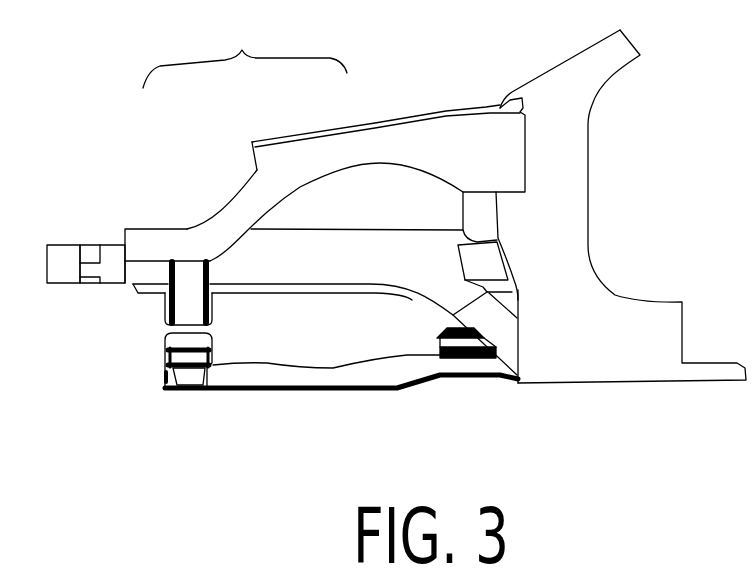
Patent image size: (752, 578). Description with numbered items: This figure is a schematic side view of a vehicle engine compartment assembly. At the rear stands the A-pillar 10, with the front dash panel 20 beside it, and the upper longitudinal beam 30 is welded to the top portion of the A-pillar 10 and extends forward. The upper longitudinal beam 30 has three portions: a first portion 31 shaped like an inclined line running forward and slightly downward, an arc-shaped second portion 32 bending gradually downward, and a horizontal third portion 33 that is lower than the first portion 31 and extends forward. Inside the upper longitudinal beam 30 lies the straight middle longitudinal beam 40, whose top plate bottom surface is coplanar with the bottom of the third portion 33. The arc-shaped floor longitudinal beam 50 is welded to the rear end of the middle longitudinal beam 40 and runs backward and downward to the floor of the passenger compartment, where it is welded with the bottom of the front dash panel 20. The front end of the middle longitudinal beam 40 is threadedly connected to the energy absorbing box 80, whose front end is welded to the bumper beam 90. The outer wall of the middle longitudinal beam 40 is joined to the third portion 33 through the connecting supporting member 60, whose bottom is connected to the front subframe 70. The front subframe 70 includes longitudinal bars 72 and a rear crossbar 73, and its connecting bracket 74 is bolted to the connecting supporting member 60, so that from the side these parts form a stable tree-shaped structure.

The A-pillar 10 is at (598, 65).
The front dash panel 20 is at (480, 212).
The upper longitudinal beam 30 is at (245, 54).
The first portion 31 is at (342, 150).
The second portion 32 is at (243, 217).
The third portion 33 is at (156, 243).
The middle longitudinal beam 40 is at (372, 255).
The floor longitudinal beam 50 is at (502, 332).
The connecting supporting member 60 is at (185, 310).
The front subframe 70 is at (263, 400).
The longitudinal bar 72 is at (317, 377).
The rear crossbar 73 is at (466, 343).
The connecting bracket 74 is at (189, 368).
The energy absorbing box 80 is at (112, 253).
The bumper beam 90 is at (60, 253).